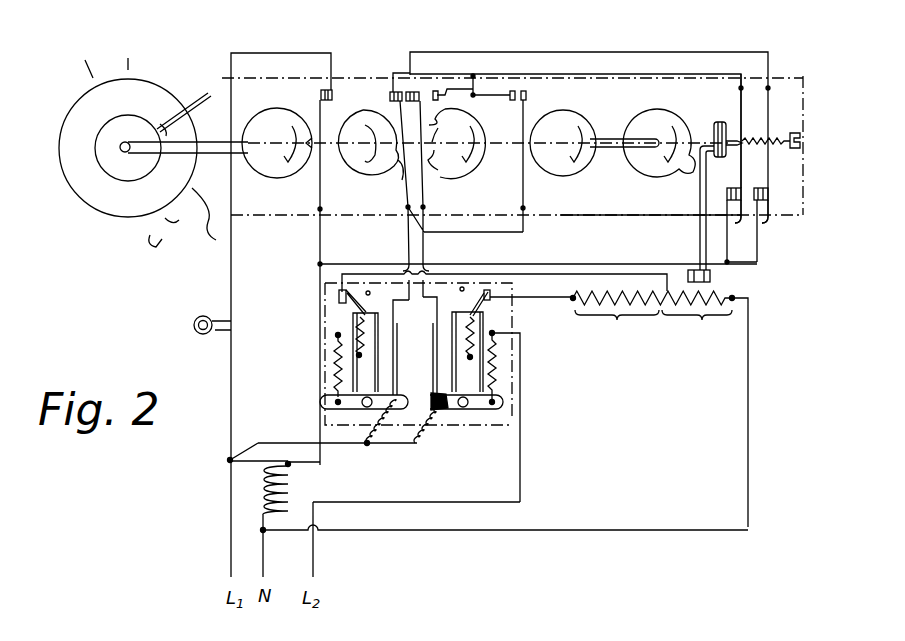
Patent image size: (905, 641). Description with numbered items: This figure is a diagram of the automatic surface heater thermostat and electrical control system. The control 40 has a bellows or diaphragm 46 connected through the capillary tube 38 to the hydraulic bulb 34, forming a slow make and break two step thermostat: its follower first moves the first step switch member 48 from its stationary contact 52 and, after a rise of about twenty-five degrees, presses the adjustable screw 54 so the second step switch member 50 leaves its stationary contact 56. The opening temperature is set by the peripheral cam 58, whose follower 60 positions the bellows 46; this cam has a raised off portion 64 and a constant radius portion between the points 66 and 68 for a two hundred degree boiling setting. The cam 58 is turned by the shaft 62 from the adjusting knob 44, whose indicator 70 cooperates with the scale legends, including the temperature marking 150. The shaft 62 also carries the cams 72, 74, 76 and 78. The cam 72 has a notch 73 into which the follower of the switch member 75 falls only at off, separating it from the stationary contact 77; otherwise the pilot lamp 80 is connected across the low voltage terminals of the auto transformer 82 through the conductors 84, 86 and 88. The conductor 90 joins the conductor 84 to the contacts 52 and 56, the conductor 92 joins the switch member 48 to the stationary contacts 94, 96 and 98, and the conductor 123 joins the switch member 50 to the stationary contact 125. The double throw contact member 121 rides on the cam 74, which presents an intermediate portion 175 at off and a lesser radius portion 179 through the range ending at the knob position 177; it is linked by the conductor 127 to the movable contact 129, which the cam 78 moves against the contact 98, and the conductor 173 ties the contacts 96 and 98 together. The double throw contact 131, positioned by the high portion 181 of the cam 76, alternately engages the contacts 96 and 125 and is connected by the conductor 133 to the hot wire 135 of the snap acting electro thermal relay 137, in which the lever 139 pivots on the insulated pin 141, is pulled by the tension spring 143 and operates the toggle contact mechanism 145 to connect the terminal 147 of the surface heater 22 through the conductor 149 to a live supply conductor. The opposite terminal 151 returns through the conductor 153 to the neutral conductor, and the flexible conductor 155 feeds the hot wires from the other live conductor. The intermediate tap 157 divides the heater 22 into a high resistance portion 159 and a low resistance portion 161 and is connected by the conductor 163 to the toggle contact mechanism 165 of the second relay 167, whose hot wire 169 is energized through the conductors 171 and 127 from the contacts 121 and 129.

The surface heater 22 is at (658, 333).
The hydraulic bulb 34 is at (710, 276).
The capillary tube 38 is at (700, 236).
The control 40 is at (277, 80).
The adjusting knob 44 is at (128, 202).
The bellows or diaphragm 46 is at (727, 131).
The first step switch member 48 is at (742, 219).
The second step switch member 50 is at (777, 219).
The stationary contact 52 is at (724, 190).
The adjustable screw 54 is at (786, 133).
The stationary contact 56 is at (756, 188).
The peripheral cam 58 is at (648, 172).
The cam follower 60 is at (710, 132).
The shaft 62 is at (612, 132).
The raised off portion 64 is at (692, 176).
The cam point 66 is at (648, 114).
The cam point 68 is at (686, 114).
The indicator 70 is at (166, 124).
The cam 72 is at (269, 166).
The notch 73 is at (305, 166).
The cam 74 is at (366, 168).
The switch member 75 is at (321, 96).
The cam 76 is at (475, 164).
The stationary contact 77 is at (332, 96).
The cam 78 is at (564, 168).
The pilot lamp 80 is at (194, 326).
The auto transformer 82 is at (288, 491).
The conductor 84 is at (320, 354).
The conductor 86 is at (231, 292).
The conductor 88 is at (226, 410).
The conductor 90 is at (558, 262).
The conductor 92 is at (543, 74).
The stationary contact 94 is at (388, 98).
The stationary contact 96 is at (471, 75).
The stationary contact 98 is at (511, 88).
The double throw contact member 121 is at (399, 214).
The conductor 123 is at (658, 52).
The stationary contact 125 is at (410, 90).
The conductor 127 is at (478, 240).
The movable contact 129 is at (526, 192).
The double throw switch contact 131 is at (428, 184).
The conductor 133 is at (424, 258).
The hot wire 135 is at (426, 346).
The electro thermal relay 137 is at (474, 316).
The lever 139 is at (490, 420).
The insulated pin 141 is at (369, 396).
The tension spring 143 is at (500, 358).
The toggle contact mechanism 145 is at (482, 297).
The terminal 147 is at (538, 298).
The conductor 149 is at (520, 464).
The pointer 150 is at (231, 77).
The terminal 151 is at (736, 300).
The conductor 153 is at (637, 527).
The flexible conductor 155 is at (368, 446).
The intermediate tap 157 is at (660, 288).
The high resistance portion 159 is at (606, 320).
The low resistance portion 161 is at (692, 320).
The conductor 163 is at (572, 274).
The toggle contact mechanism 165 is at (348, 308).
The electro thermal relay 167 is at (330, 404).
The hot wire 169 is at (414, 342).
The conductor 171 is at (406, 250).
The conductor 173 is at (500, 104).
The intermediate radius portion 175 is at (402, 182).
The knob position 177 is at (219, 240).
The lesser radius portion 179 is at (378, 138).
The high portion 181 is at (459, 128).